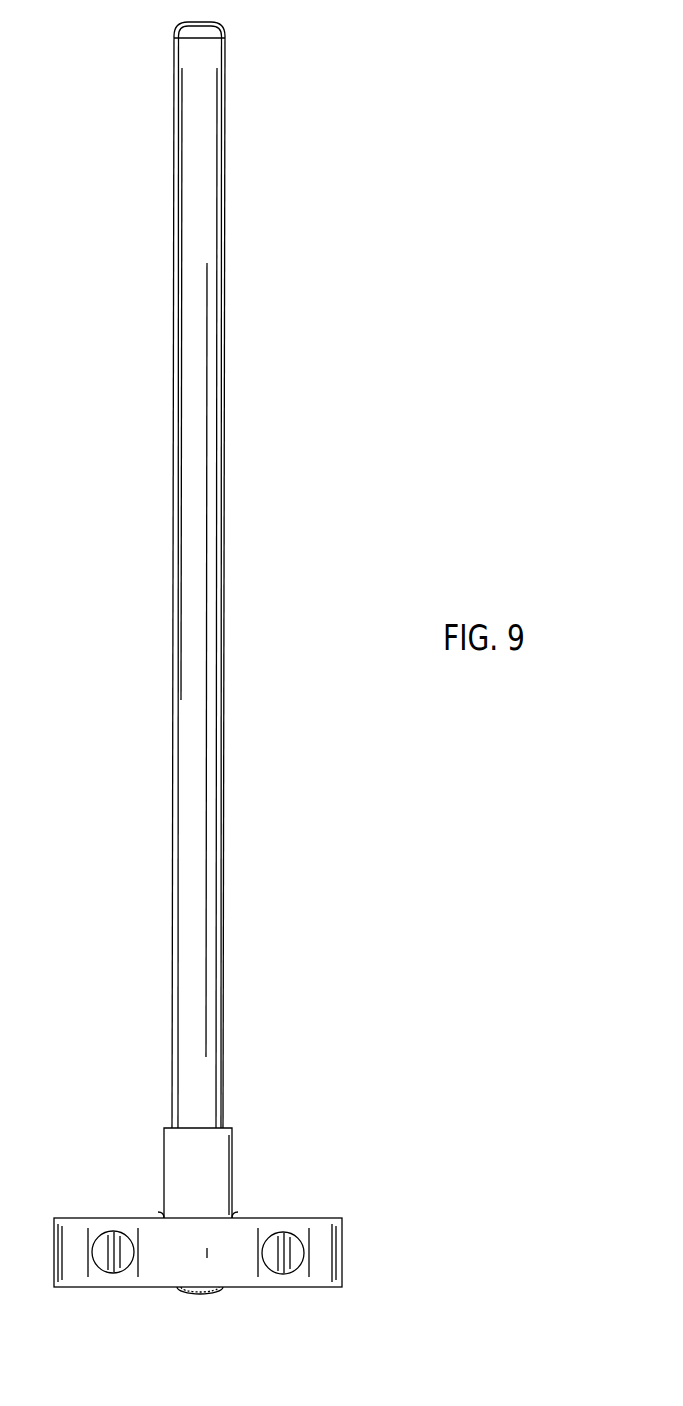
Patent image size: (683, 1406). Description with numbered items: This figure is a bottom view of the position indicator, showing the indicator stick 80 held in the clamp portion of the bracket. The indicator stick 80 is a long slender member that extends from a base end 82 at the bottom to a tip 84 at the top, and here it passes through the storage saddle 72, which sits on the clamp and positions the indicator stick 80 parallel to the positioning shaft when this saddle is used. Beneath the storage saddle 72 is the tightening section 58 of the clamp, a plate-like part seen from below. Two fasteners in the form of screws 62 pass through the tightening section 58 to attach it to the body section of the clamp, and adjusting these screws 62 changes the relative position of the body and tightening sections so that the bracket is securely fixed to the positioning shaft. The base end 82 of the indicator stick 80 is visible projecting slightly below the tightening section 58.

The tightening section 58 is at (322, 1247).
The screw 62 is at (116, 1231).
The storage saddle 72 is at (221, 1146).
The indicator stick 80 is at (255, 451).
The base end 82 is at (200, 1292).
The tip 84 is at (200, 24).